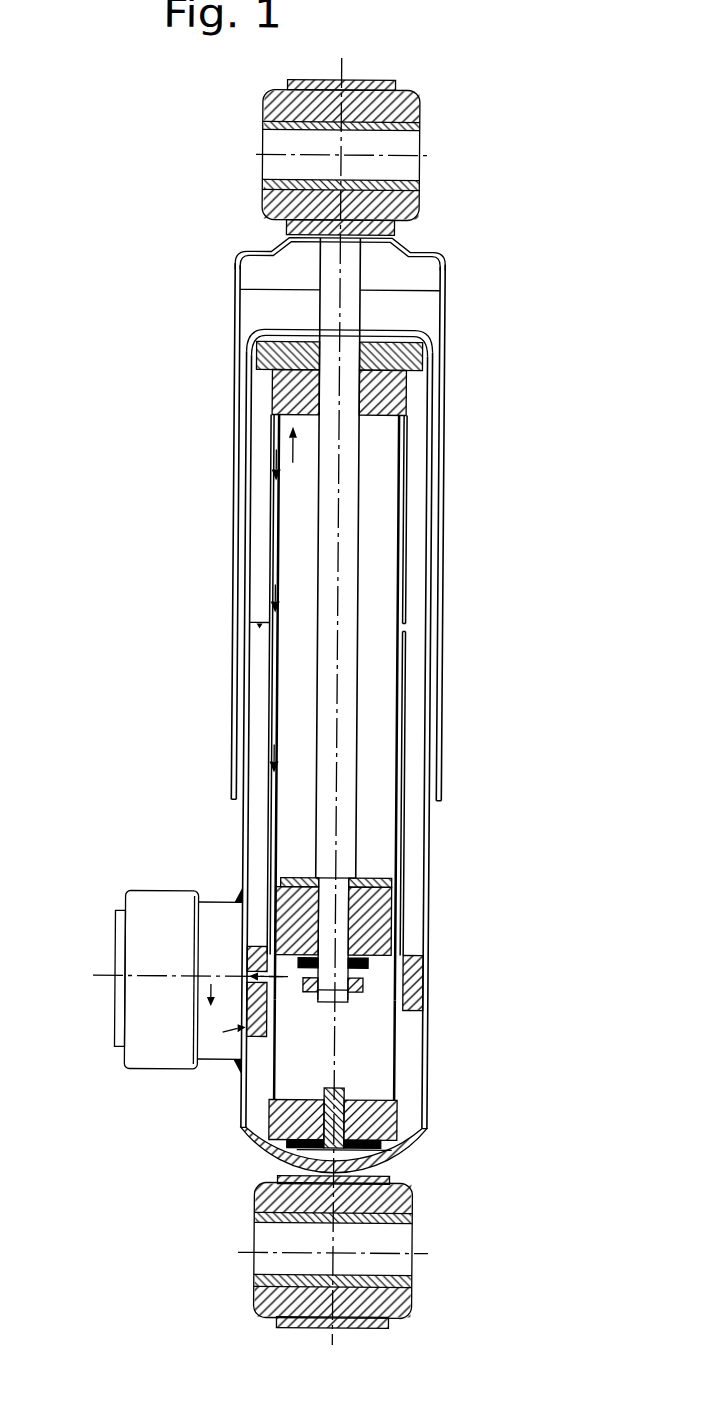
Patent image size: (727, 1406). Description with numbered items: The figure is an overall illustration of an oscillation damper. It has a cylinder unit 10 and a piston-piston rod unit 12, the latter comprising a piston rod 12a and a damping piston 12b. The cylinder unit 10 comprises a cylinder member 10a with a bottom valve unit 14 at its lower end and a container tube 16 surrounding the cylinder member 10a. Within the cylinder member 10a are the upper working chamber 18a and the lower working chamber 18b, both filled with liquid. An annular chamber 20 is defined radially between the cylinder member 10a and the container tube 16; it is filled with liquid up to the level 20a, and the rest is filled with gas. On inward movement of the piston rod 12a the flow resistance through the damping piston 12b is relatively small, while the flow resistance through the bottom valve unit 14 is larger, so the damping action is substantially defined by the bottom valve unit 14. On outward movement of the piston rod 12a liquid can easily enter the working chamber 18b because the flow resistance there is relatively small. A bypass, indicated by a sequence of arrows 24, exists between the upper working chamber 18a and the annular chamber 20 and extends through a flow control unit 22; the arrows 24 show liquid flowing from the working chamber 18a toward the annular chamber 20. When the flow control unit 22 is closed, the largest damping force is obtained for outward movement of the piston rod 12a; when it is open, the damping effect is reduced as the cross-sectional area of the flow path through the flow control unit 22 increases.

The cylinder unit 10 is at (472, 858).
The cylinder member 10a is at (427, 680).
The piston-piston rod unit 12 is at (352, 318).
The piston rod 12a is at (353, 464).
The damping piston 12b is at (388, 922).
The bottom valve unit 14 is at (420, 1130).
The container tube 16 is at (433, 822).
The upper working chamber 18a is at (375, 737).
The lower working chamber 18b is at (378, 1084).
The annular chamber 20 is at (410, 537).
The liquid level 20a is at (414, 622).
The flow control unit 22 is at (143, 942).
The arrows indicating bypass flow path 24 is at (289, 440).